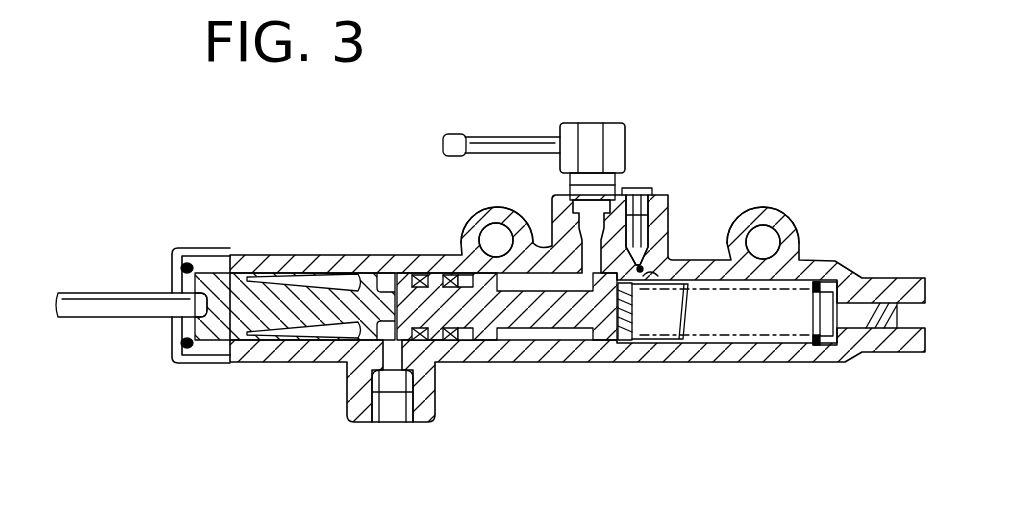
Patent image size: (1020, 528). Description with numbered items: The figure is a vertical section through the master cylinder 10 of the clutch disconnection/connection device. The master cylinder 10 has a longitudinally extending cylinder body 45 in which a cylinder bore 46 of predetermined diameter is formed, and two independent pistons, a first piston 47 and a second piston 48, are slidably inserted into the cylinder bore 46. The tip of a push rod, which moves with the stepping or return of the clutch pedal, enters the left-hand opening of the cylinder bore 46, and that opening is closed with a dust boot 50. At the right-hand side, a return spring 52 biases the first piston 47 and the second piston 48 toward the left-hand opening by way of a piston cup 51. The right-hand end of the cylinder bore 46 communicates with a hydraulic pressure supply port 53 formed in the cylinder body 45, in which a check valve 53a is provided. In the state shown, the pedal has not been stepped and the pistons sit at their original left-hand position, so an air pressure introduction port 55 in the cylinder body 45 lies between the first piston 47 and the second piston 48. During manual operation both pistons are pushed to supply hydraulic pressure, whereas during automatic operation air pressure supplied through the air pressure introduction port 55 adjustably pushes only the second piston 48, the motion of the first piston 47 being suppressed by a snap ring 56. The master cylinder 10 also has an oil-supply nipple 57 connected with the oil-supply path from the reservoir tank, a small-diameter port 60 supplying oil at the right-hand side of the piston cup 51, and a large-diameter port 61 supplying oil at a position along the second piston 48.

The master cylinder 10 is at (370, 180).
The cylinder body 45 is at (468, 207).
The cylinder bore 46 is at (92, 297).
The first piston 47 is at (307, 298).
The second piston 48 is at (502, 318).
The dust boot 50 is at (170, 340).
The piston cup 51 is at (633, 343).
The return spring 52 is at (687, 325).
The hydraulic pressure supply port 53 is at (910, 303).
The check valve 53a is at (828, 300).
The air pressure introduction port 55 is at (392, 410).
The snap ring 56 is at (175, 278).
The oil-supply nipple 57 is at (593, 140).
The small-diameter port 60 is at (653, 270).
The large-diameter port 61 is at (570, 242).